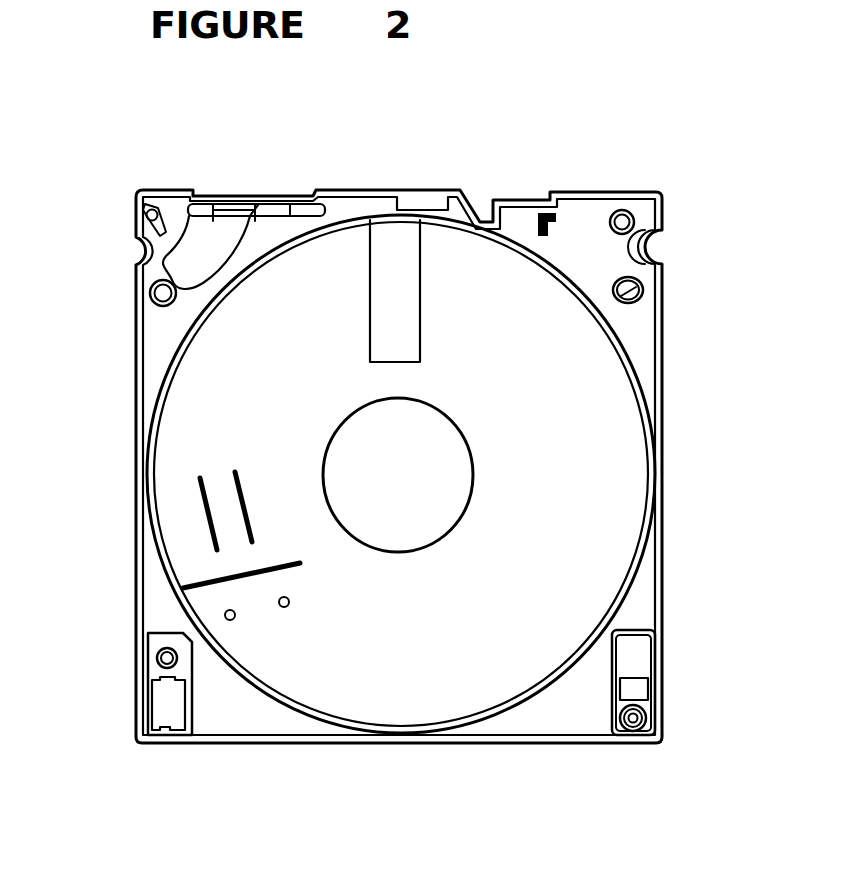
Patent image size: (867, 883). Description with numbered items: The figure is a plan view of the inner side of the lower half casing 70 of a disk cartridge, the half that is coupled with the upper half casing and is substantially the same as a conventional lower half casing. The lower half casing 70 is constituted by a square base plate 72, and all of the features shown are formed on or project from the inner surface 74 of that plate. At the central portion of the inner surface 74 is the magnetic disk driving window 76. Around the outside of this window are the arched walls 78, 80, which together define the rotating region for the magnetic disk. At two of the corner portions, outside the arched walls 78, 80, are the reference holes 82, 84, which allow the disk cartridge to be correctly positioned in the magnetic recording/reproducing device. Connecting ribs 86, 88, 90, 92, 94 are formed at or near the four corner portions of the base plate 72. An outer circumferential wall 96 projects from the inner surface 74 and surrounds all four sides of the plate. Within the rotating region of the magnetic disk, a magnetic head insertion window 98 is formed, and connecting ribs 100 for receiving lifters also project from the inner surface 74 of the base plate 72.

The lower half casing 70 is at (410, 803).
The square base plate 72 is at (672, 612).
The inner surface 74 is at (550, 712).
The magnetic disk driving window 76 is at (453, 470).
The arched wall 78 is at (188, 325).
The arched wall 80 is at (348, 728).
The reference hole 82 is at (150, 292).
The reference hole 84 is at (643, 287).
The connecting rib 86 is at (154, 209).
The connecting rib 88 is at (544, 212).
The connecting rib 90 is at (627, 211).
The connecting rib 92 is at (646, 718).
The connecting rib 94 is at (157, 658).
The outer circumferential wall 96 is at (660, 352).
The magnetic head insertion window 98 is at (400, 317).
The connecting ribs for receiving lifters 100 is at (302, 563).